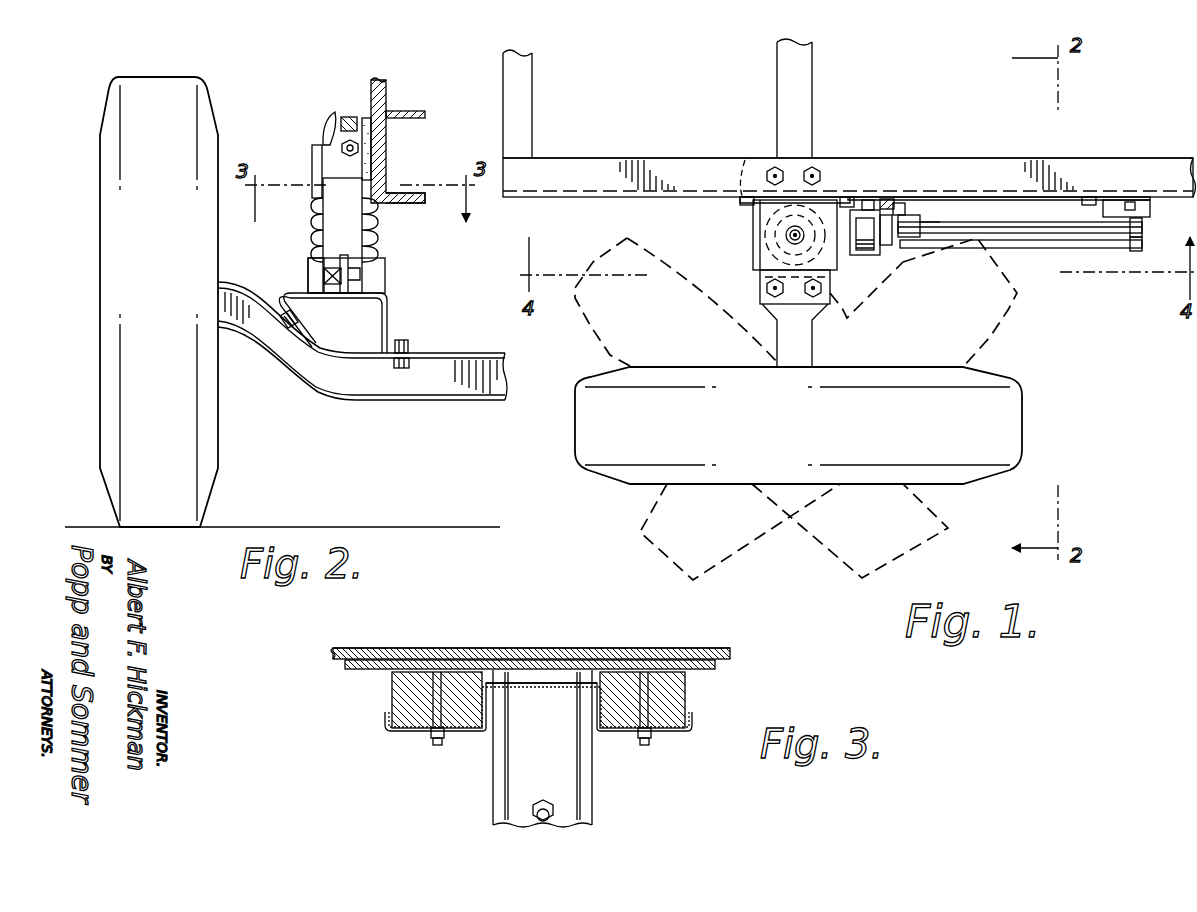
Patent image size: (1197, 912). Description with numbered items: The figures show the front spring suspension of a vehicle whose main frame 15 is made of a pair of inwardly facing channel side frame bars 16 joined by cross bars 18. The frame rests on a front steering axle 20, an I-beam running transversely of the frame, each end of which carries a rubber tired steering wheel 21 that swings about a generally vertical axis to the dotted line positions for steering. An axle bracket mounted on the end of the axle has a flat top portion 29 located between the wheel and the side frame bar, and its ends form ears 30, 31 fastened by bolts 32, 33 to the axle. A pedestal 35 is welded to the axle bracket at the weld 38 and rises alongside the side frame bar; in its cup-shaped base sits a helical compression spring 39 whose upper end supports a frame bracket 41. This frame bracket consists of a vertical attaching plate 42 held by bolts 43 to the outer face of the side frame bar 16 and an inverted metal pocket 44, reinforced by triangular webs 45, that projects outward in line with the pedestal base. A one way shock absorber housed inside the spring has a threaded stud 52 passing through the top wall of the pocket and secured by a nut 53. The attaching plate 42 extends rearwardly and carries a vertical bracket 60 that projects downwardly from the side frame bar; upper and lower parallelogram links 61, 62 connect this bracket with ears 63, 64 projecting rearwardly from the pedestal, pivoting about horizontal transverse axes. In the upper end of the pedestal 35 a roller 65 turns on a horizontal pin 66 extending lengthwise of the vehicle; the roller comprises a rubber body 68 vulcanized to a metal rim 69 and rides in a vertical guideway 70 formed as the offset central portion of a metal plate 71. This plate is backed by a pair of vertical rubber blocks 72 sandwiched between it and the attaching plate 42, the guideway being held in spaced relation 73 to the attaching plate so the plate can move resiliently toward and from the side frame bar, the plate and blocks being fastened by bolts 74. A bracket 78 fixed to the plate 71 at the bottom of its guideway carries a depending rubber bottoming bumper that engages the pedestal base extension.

In FIG. 1, the main frame 15 is at (1103, 152).
In FIG. 2, the main frame 15 is at (416, 100).
In FIG. 3, the main frame 15 is at (376, 645).
In FIG. 1, the main longitudinal side frame bar 16 is at (690, 161).
In FIG. 2, the main longitudinal side frame bar 16 is at (422, 115).
In FIG. 3, the main longitudinal side frame bar 16 is at (705, 646).
In FIG. 1, the cross bar 18 is at (532, 68).
In FIG. 1, the front steering axle 20 is at (777, 55).
In FIG. 2, the front steering axle 20 is at (485, 353).
In FIG. 1, the front rubber tired steering wheel 21 is at (1010, 316).
In FIG. 2, the front rubber tired steering wheel 21 is at (135, 96).
In FIG. 2, the flat top portion 29 is at (365, 308).
In FIG. 2, the ear 30 is at (310, 365).
In FIG. 2, the ear 31 is at (407, 345).
In FIG. 1, the bolt 32 is at (815, 300).
In FIG. 2, the bolt 32 is at (290, 328).
In FIG. 1, the bolt 33 is at (780, 168).
In FIG. 2, the bolt 33 is at (402, 368).
In FIG. 1, the pedestal 35 is at (878, 250).
In FIG. 2, the weld 38 is at (318, 290).
In FIG. 1, the helical metal compression spring 39 is at (754, 167).
In FIG. 2, the helical metal compression spring 39 is at (318, 226).
In FIG. 2, the frame bracket 41 is at (398, 206).
In FIG. 1, the vertical attaching plate 42 is at (1020, 200).
In FIG. 2, the vertical attaching plate 42 is at (390, 96).
In FIG. 3, the vertical attaching plate 42 is at (700, 668).
In FIG. 1, the bolt 43 is at (745, 202).
In FIG. 2, the inverted metal pocket 44 is at (317, 150).
In FIG. 1, the triangular web 45 is at (753, 222).
In FIG. 1, the threaded stud 52 is at (792, 236).
In FIG. 1, the nut 53 is at (790, 240).
In FIG. 1, the vertical bracket 60 is at (1150, 208).
In FIG. 1, the upper parallelogram link 61 is at (1028, 230).
In FIG. 2, the upper parallelogram link 61 is at (348, 118).
In FIG. 1, the lower parallelogram link 62 is at (1062, 246).
In FIG. 2, the lower parallelogram link 62 is at (306, 284).
In FIG. 1, the ear 63 is at (935, 203).
In FIG. 1, the ear 64 is at (925, 232).
In FIG. 2, the ear 64 is at (385, 269).
In FIG. 1, the roller 65 is at (862, 256).
In FIG. 2, the horizontal pin 66 is at (345, 120).
In FIG. 2, the rubber body 68 is at (375, 143).
In FIG. 2, the spring plate 69 is at (328, 130).
In FIG. 1, the vertical guideway 70 is at (868, 200).
In FIG. 3, the vertical guideway 70 is at (562, 690).
In FIG. 3, the metal plate 71 is at (690, 730).
In FIG. 1, the vertical rubber block 72 is at (845, 196).
In FIG. 3, the vertical rubber block 72 is at (392, 695).
In FIG. 3, the spaced relation 73 is at (528, 680).
In FIG. 3, the bolt 74 is at (437, 747).
In FIG. 3, the bracket 78 is at (520, 766).